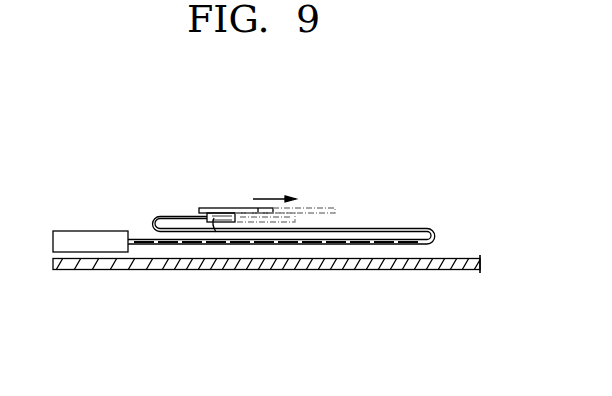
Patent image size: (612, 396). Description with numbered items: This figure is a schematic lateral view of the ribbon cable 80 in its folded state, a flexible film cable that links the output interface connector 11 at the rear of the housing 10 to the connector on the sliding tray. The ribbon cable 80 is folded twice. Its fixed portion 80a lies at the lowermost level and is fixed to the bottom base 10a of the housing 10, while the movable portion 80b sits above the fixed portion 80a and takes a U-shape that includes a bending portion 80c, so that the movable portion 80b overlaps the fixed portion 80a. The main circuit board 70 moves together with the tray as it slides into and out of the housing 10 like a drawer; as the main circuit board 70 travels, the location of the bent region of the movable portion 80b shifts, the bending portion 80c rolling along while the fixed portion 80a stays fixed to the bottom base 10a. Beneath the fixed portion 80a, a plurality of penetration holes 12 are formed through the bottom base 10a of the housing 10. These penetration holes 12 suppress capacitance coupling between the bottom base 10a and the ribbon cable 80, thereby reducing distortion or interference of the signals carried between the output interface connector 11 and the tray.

The output interface connector 11 is at (68, 230).
The penetration holes 12 is at (163, 268).
The bottom base of the housing 10a is at (267, 290).
The housing 10 is at (267, 290).
The main circuit board 70 is at (207, 207).
The ribbon cable 80 is at (280, 194).
The fixed portion 80a is at (407, 238).
The movable portion 80b is at (430, 177).
The bending portion 80c is at (155, 217).